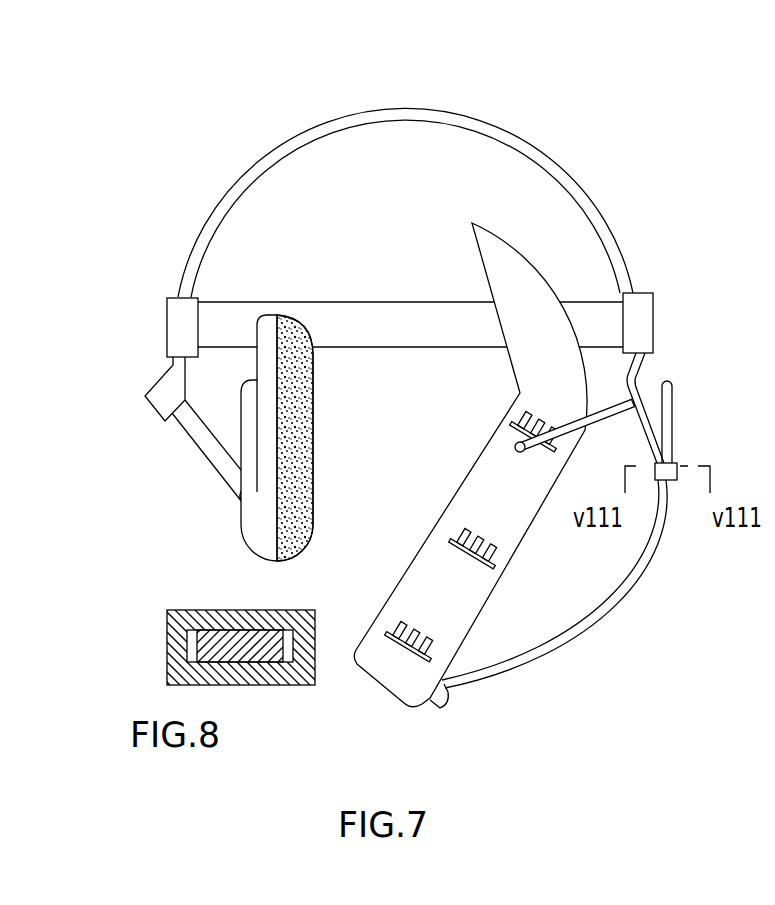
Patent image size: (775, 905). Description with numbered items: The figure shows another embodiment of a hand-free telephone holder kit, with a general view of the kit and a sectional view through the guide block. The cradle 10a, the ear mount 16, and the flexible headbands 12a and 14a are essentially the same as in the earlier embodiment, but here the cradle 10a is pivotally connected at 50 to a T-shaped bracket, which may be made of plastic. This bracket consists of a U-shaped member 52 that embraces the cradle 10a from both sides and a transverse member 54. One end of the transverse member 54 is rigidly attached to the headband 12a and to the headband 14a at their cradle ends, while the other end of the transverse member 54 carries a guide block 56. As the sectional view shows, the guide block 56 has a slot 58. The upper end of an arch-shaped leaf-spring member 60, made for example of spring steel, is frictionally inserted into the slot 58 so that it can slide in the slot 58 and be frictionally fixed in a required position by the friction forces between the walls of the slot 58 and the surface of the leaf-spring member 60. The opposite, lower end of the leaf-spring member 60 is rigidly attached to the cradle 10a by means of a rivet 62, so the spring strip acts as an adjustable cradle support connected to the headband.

In FIG. 7, the cradle 10a is at (468, 465).
In FIG. 7, the headband 12a is at (275, 160).
In FIG. 7, the headband 14a is at (362, 320).
In FIG. 7, the ear mount 16 is at (303, 438).
In FIG. 7, the pivot connection 50 is at (528, 450).
In FIG. 7, the U-shaped member 52 is at (610, 413).
In FIG. 7, the transverse member 54 is at (637, 383).
In FIG. 7, the guide block 56 is at (670, 480).
In FIG. 8, the guide block 56 is at (302, 680).
In FIG. 8, the slot 58 is at (167, 613).
In FIG. 7, the leaf-spring member 60 is at (605, 612).
In FIG. 8, the leaf-spring member 60 is at (237, 643).
In FIG. 7, the rivet 62 is at (447, 702).